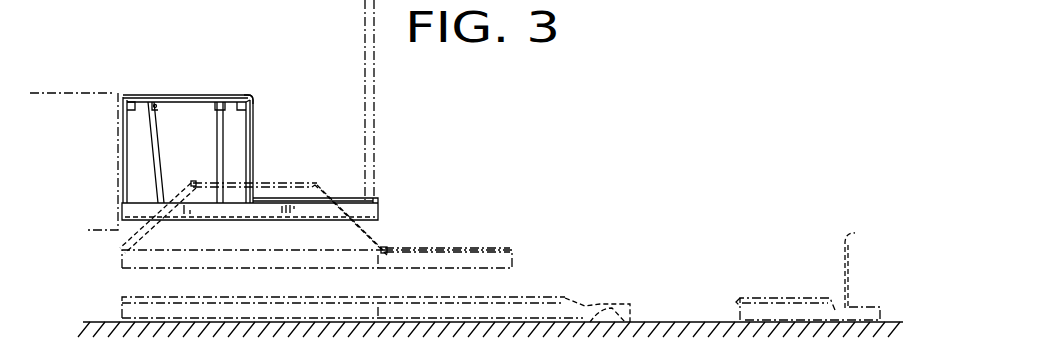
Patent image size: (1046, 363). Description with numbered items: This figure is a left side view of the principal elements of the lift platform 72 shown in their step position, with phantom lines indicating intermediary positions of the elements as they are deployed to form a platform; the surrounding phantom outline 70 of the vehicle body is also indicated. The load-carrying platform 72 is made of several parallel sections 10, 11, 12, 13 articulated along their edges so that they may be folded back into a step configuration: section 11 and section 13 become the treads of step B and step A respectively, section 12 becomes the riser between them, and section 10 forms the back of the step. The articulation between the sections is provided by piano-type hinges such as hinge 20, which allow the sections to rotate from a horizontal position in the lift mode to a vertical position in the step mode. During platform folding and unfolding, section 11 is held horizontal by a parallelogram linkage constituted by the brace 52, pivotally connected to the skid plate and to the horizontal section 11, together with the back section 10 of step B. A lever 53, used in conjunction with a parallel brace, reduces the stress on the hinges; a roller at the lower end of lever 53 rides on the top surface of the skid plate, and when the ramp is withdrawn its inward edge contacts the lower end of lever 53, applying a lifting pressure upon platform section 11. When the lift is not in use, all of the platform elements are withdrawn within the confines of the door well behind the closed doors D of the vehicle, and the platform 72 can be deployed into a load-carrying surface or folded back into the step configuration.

The platform section 10 is at (120, 148).
The platform section 11 is at (187, 74).
The platform section 12 is at (253, 125).
The platform section 13 is at (350, 199).
The piano-type hinge 20 is at (250, 96).
The brace 52 is at (218, 143).
The lever 53 is at (155, 138).
The phantom enclosure line 70 is at (90, 92).
The lift platform 72 is at (513, 299).
The step A is at (344, 200).
The doors D is at (376, 89).